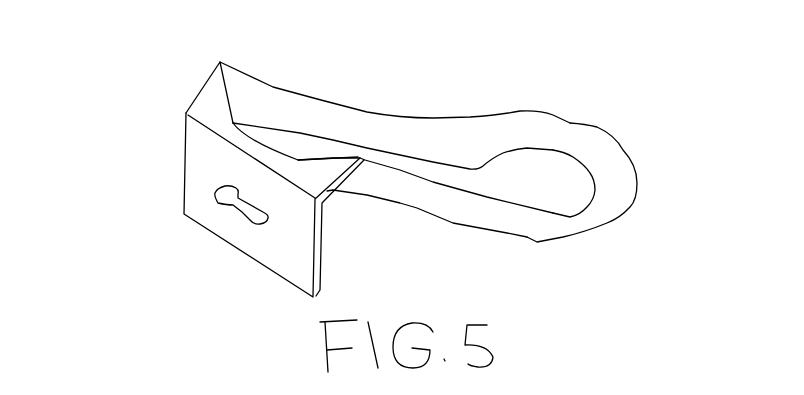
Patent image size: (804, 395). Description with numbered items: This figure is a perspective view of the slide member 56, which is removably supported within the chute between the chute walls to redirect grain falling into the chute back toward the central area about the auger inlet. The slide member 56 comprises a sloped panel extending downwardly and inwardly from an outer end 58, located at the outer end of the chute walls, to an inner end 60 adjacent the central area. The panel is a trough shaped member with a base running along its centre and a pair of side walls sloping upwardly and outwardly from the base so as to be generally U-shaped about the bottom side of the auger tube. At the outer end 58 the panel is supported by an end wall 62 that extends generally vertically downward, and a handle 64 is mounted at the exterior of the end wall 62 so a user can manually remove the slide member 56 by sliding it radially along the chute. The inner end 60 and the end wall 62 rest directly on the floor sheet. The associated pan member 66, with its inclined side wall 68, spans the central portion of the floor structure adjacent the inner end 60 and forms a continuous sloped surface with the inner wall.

The slide member 56 is at (177, 22).
The outer end 58 is at (227, 142).
The inner end 60 is at (587, 290).
The end wall 62 is at (264, 245).
The handle 64 is at (232, 208).
The pan member 66 is at (610, 73).
The side wall 68 is at (670, 138).